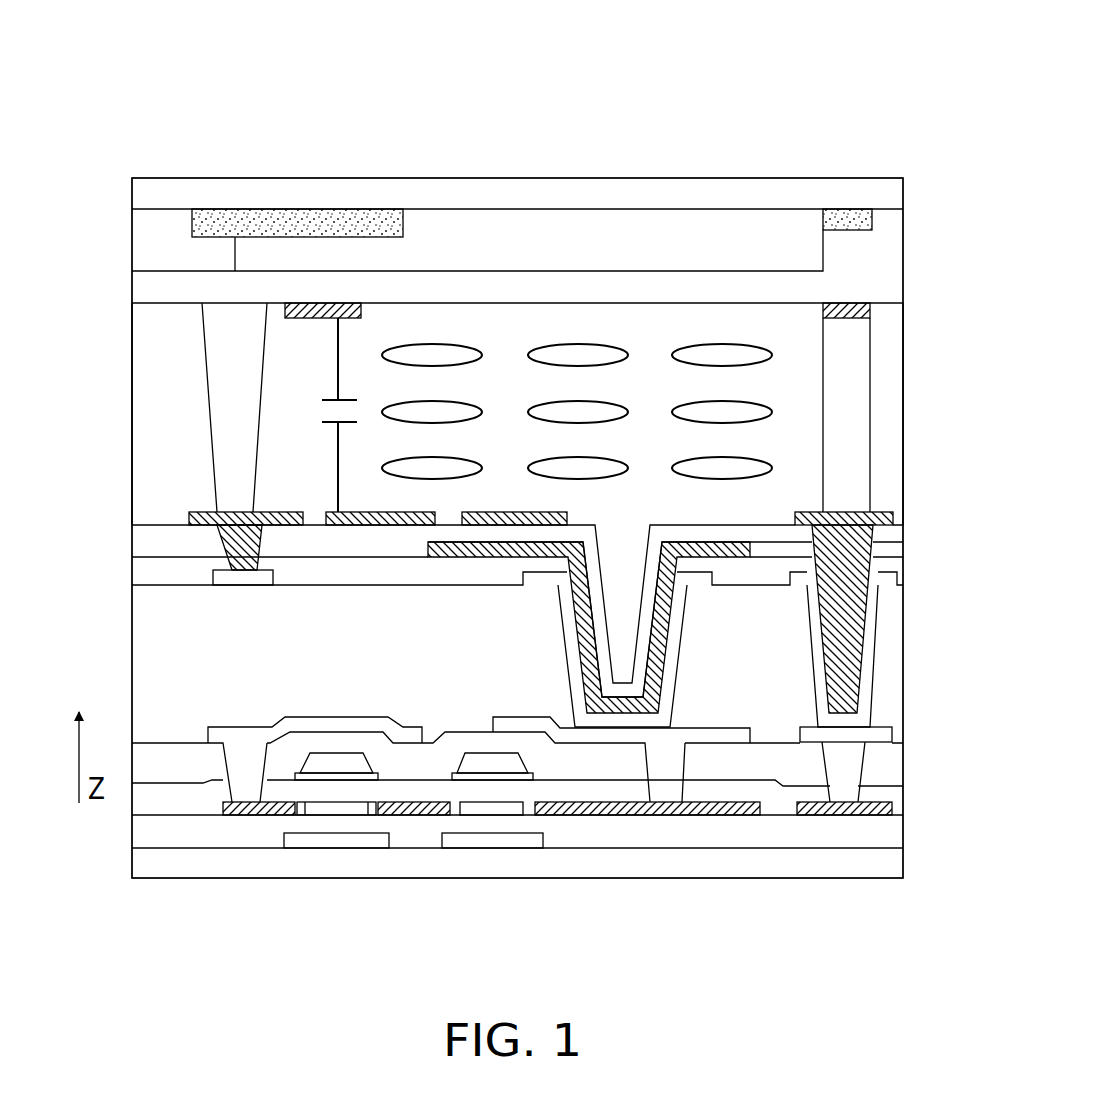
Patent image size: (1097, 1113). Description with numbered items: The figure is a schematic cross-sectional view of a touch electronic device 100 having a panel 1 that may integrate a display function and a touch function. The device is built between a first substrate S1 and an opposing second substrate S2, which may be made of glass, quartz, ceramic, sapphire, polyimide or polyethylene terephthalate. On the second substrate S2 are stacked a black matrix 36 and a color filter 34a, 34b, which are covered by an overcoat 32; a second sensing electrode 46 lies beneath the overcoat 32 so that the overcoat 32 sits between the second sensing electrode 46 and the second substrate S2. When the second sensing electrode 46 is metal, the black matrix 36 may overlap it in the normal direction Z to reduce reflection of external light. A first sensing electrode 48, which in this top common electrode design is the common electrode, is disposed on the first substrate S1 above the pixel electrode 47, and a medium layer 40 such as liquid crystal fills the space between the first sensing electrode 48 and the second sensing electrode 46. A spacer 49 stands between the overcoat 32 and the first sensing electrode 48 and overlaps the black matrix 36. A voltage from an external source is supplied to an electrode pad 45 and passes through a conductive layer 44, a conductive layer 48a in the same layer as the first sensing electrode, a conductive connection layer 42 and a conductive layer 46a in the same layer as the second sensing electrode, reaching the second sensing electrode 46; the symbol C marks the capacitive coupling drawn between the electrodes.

The touch electronic device 100 is at (144, 106).
The panel 1 is at (824, 136).
The first substrate S1 is at (402, 868).
The second substrate S2 is at (622, 190).
The overcoat 32 is at (890, 247).
The color filter 34a is at (153, 243).
The color filter 34b is at (503, 222).
The black matrix 36 is at (300, 213).
The medium layer 40 is at (748, 411).
The conductive connection layer 42 is at (850, 463).
The conductive layer 44 is at (880, 735).
The electrode pad 45 is at (883, 808).
The second sensing electrode 46 is at (305, 320).
The conductive layer 46a is at (848, 308).
The pixel electrode 47 is at (752, 543).
The first sensing electrode 48 is at (585, 521).
The conductive layer 48a is at (887, 518).
The spacer 49 is at (248, 385).
The storage capacitor C is at (327, 415).